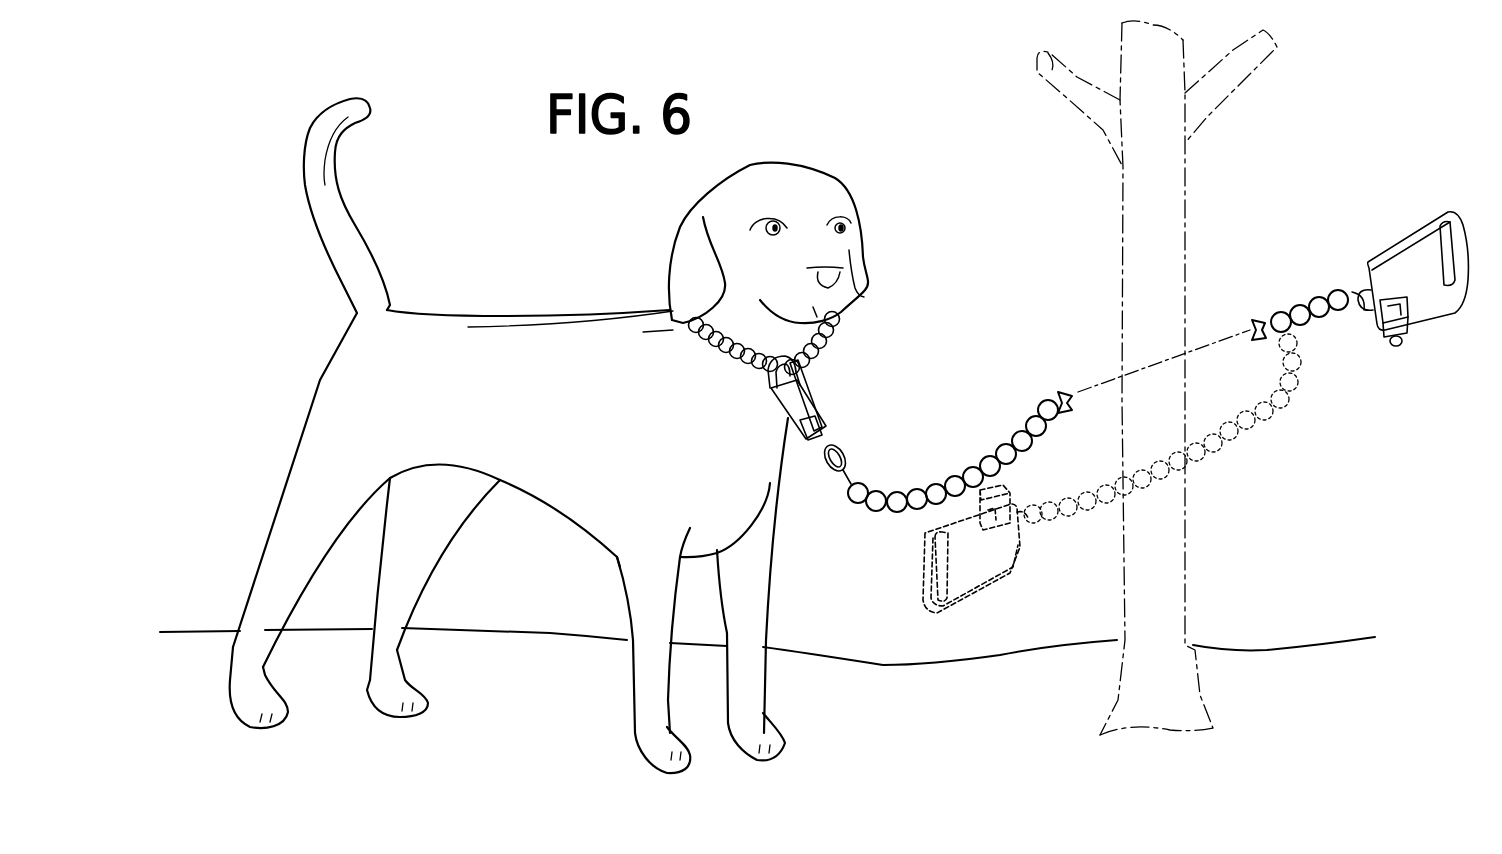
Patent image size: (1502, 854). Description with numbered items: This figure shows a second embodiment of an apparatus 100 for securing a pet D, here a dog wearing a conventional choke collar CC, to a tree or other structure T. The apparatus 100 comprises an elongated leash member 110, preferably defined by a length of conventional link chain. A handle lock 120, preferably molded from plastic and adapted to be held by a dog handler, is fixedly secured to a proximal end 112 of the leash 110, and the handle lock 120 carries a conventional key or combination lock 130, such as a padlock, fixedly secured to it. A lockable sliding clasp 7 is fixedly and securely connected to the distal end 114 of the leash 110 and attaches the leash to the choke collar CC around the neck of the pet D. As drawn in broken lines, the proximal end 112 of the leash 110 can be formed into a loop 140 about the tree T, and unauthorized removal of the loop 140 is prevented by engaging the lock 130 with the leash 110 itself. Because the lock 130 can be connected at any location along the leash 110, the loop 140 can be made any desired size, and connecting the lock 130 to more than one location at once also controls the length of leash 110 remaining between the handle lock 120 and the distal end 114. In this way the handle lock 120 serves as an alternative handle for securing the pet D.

The lockable sliding clasp 7 is at (782, 412).
The apparatus for securing a pet 100 is at (1247, 257).
The elongated leash member 110 is at (1045, 398).
The proximal end of the leash 112 is at (1340, 325).
The distal end of the leash 114 is at (879, 482).
The handle lock 120 is at (1395, 233).
The key or combination lock 130 is at (1374, 427).
The loop 140 is at (1096, 452).
The choke collar CC is at (716, 359).
The pet D is at (500, 403).
The tree or other structure T is at (1121, 254).